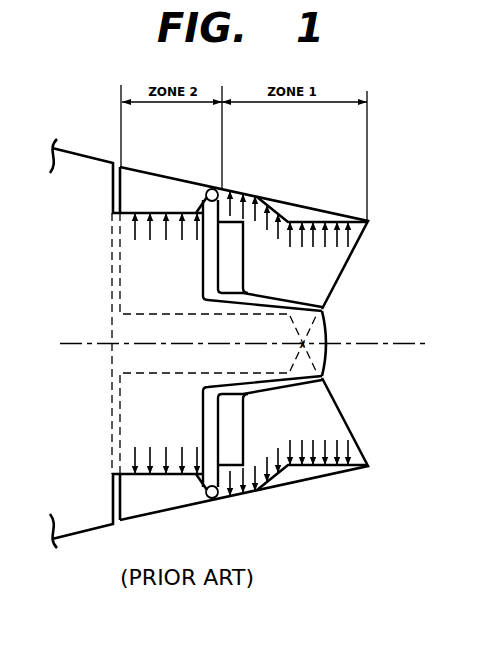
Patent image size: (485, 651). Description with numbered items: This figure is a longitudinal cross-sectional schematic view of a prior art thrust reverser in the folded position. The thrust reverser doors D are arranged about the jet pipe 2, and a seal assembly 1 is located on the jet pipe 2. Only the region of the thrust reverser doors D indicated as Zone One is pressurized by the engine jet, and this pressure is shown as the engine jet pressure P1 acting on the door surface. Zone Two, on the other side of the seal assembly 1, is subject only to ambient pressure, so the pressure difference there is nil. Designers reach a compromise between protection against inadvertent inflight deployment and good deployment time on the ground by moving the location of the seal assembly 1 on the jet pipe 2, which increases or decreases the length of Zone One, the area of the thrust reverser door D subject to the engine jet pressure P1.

The seal assembly 1 is at (203, 263).
The jet pipe 2 is at (128, 212).
The thrust reverser doors D is at (134, 170).
The engine jet pressure P1 is at (241, 343).